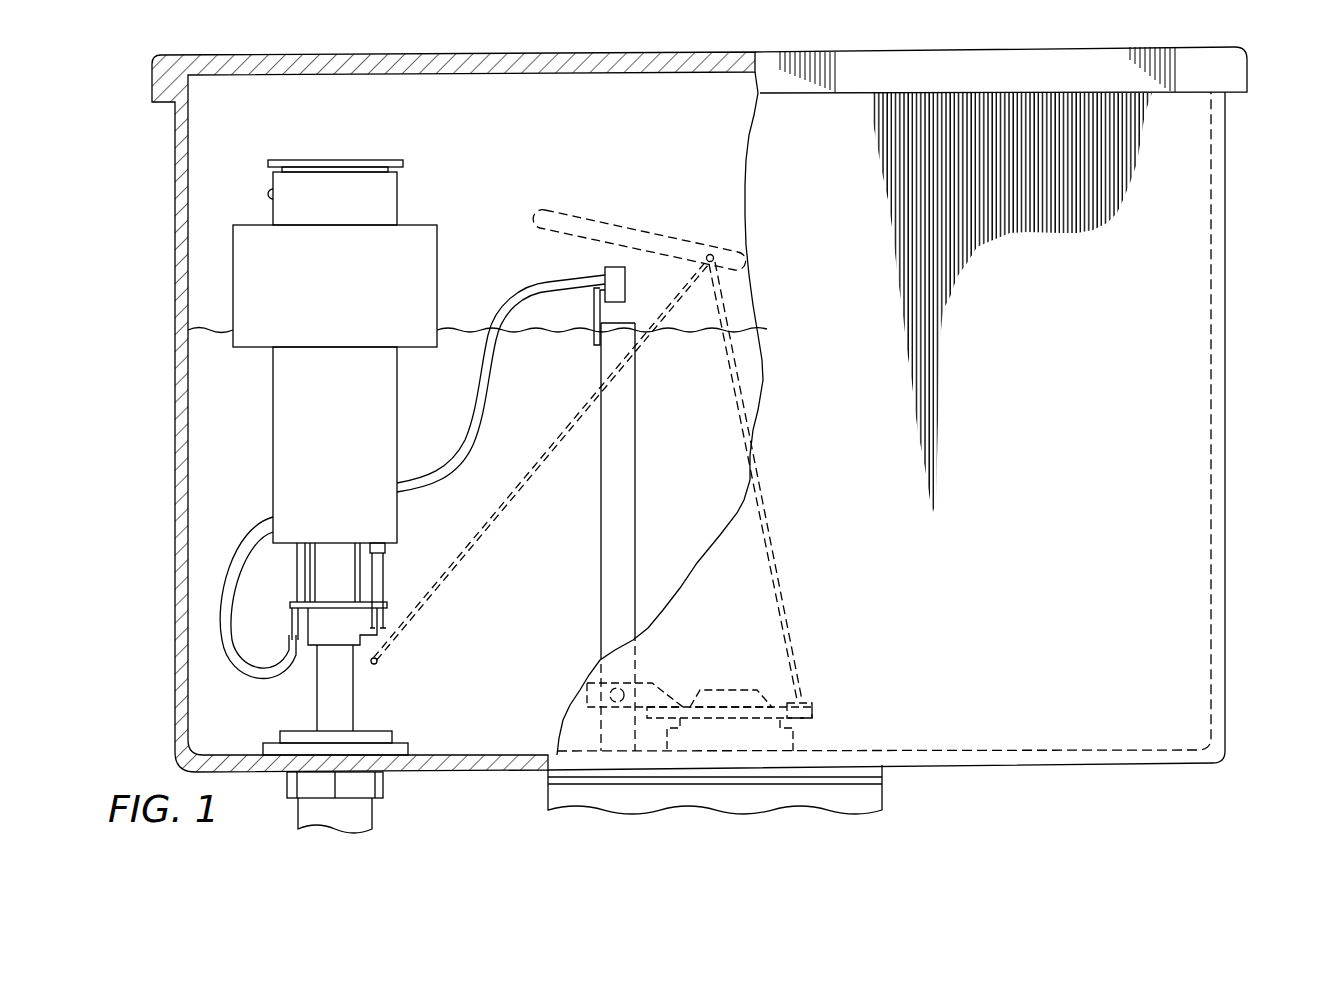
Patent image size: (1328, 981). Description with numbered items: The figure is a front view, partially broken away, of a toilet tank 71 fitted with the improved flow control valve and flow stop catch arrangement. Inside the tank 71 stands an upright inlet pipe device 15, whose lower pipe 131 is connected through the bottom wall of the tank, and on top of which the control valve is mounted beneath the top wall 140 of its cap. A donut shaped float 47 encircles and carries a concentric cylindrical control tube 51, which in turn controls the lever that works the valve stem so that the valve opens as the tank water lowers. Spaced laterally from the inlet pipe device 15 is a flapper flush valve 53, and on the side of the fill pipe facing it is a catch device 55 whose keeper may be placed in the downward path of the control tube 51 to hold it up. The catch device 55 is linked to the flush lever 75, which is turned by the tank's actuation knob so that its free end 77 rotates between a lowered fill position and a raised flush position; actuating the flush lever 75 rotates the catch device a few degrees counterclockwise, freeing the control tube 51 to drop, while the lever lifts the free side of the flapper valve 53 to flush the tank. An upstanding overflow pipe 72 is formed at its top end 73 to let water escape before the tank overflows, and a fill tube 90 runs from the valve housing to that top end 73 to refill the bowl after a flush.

The inlet pipe device 15 is at (463, 470).
The float 47 is at (262, 240).
The control tube 51 is at (298, 430).
The flapper flush valve 53 is at (737, 678).
The catch device 55 is at (393, 566).
The toilet tank 71 is at (1246, 306).
The overflow pipe 72 is at (612, 540).
The top end of overflow pipe 73 is at (630, 320).
The flush lever 75 is at (576, 213).
The free end of flush lever 77 is at (738, 256).
The fill tube 90 is at (487, 383).
The lower pipe 131 is at (317, 712).
The top wall of cap 140 is at (361, 158).